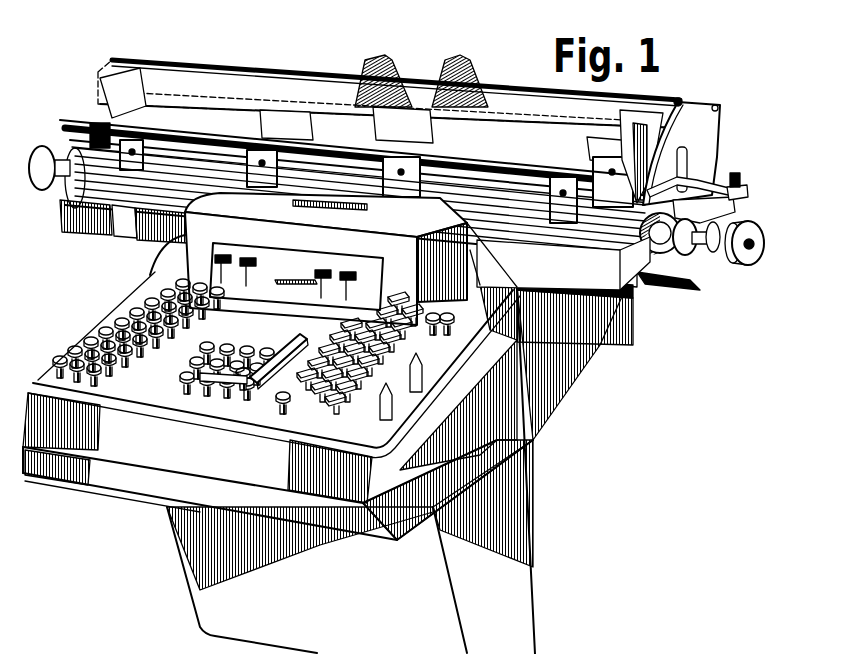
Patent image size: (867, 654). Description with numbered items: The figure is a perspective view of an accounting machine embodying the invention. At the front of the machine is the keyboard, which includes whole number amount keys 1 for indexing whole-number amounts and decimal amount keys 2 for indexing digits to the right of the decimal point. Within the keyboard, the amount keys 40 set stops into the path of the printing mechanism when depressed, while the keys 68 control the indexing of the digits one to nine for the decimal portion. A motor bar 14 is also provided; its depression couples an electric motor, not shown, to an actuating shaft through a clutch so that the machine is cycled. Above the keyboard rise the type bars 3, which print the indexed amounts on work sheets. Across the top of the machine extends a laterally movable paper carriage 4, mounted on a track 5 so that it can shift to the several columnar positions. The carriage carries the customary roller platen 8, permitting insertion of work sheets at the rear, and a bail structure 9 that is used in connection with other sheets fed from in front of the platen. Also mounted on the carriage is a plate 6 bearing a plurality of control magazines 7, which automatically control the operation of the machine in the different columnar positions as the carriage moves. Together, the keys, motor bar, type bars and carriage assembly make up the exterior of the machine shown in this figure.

The whole number amount keys 1 is at (287, 337).
The decimal amount keys 2 is at (290, 418).
The type bars 3 is at (310, 200).
The paper carriage 4 is at (225, 102).
The track 5 is at (733, 214).
The plate 6 is at (746, 193).
The control magazines 7 is at (736, 173).
The roller platen 8 is at (477, 210).
The bail structure 9 is at (527, 180).
The motor bar 14 is at (292, 342).
The amount keys 40 is at (245, 378).
The keys 68 is at (352, 330).